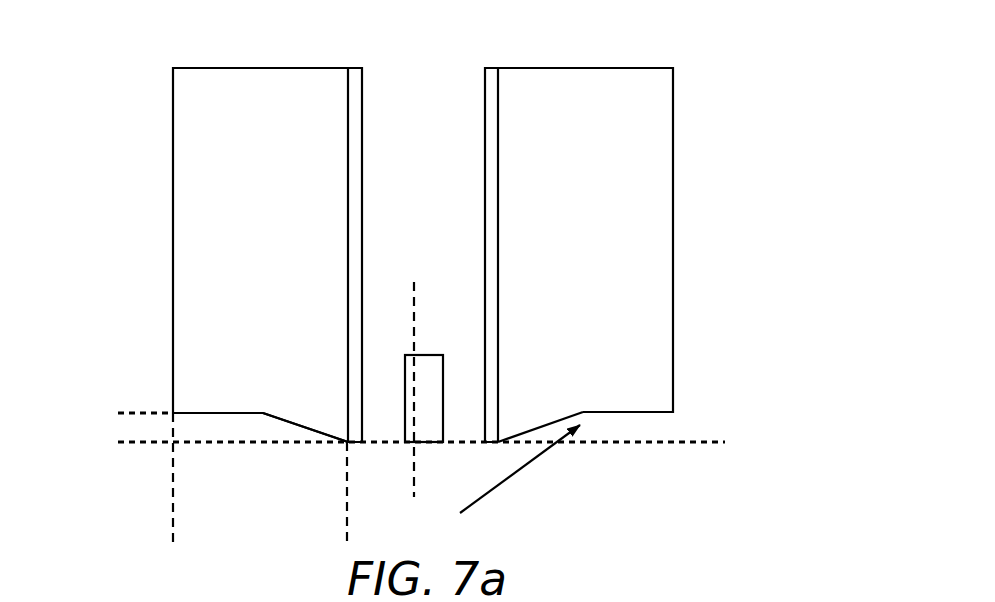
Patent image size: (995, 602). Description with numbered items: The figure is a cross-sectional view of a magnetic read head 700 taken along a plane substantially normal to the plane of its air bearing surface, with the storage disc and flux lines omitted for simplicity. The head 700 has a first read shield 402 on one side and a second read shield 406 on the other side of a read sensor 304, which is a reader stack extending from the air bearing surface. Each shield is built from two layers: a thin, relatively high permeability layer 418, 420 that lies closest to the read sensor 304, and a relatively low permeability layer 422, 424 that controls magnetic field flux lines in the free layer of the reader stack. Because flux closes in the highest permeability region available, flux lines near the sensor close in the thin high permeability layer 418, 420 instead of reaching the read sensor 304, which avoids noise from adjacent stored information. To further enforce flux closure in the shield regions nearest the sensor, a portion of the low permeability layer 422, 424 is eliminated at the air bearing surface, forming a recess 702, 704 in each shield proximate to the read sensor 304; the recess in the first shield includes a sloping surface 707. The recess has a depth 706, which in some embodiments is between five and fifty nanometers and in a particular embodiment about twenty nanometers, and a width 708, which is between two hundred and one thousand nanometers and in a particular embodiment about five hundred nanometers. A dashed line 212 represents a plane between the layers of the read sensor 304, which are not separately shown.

The head 700 is at (702, 256).
The first read shield 402 is at (362, 67).
The second read shield 406 is at (673, 67).
The thin high permeability layer 418 is at (352, 87).
The thin high permeability layer 420 is at (491, 77).
The low permeability layer 422 is at (260, 255).
The low permeability layer 424 is at (585, 255).
The read sensor 304 is at (424, 358).
The dashed line 212 is at (414, 461).
The recess 702 is at (253, 425).
The recess 704 is at (607, 427).
The depth of recess 706 is at (125, 386).
The sloping surface 707 is at (267, 427).
The width of recess 708 is at (346, 532).